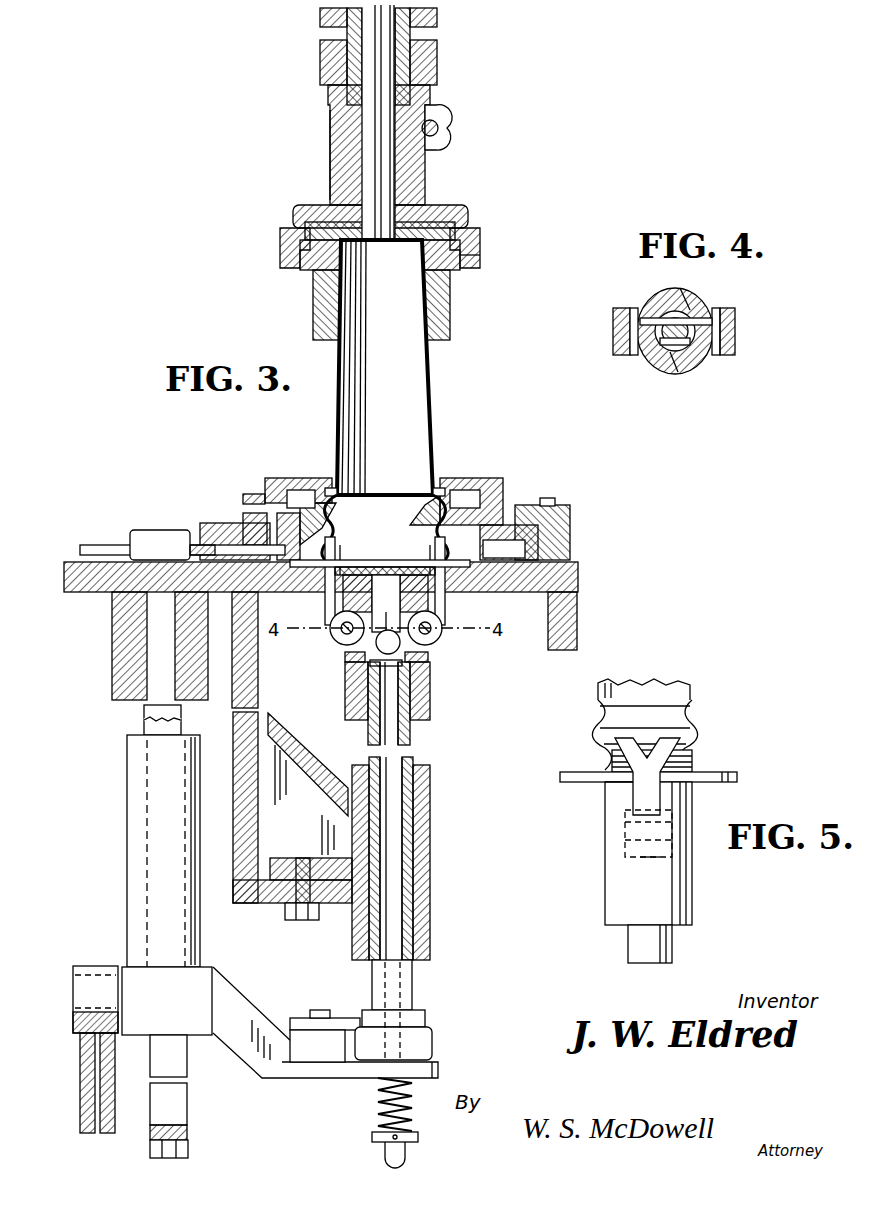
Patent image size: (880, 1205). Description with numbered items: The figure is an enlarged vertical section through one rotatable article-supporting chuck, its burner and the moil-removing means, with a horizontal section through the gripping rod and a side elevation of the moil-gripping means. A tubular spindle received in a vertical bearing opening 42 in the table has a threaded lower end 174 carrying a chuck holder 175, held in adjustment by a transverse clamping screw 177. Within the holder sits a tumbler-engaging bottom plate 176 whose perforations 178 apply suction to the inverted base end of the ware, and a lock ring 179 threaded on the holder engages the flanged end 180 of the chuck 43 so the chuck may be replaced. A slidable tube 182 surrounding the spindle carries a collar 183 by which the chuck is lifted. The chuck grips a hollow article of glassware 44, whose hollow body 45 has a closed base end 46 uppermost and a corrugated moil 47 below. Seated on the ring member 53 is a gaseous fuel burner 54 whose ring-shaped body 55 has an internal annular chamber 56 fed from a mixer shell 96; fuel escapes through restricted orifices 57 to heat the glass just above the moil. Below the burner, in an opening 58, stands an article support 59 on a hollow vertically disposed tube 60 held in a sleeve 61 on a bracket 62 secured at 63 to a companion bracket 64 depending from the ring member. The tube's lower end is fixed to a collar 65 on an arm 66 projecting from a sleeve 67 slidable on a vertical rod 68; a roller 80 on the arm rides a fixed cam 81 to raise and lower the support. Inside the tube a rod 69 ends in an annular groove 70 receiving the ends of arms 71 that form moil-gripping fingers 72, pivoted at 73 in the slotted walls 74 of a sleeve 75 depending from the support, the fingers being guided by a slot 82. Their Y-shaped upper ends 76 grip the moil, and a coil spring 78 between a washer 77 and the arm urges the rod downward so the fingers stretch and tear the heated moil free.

In FIG. 3, the vertical bearing openings 42 is at (390, 60).
In FIG. 3, the chuck 43 is at (318, 300).
In FIG. 3, the hollow article of glassware 44 is at (436, 381).
In FIG. 3, the hollow body 45 is at (350, 400).
In FIG. 5, the hollow body 45 is at (662, 683).
In FIG. 3, the closed base end 46 is at (390, 242).
In FIG. 3, the moil 47 is at (400, 512).
In FIG. 5, the moil 47 is at (680, 716).
In FIG. 3, the ring member 53 is at (578, 570).
In FIG. 3, the gaseous fuel burner 54 is at (246, 483).
In FIG. 3, the ring-shaped body 55 is at (505, 488).
In FIG. 3, the internal annular chamber 56 is at (298, 490).
In FIG. 3, the restricted orifices 57 is at (314, 494).
In FIG. 3, the openings 58 is at (468, 548).
In FIG. 3, the article support 59 is at (446, 593).
In FIG. 5, the article support 59 is at (730, 774).
In FIG. 3, the hollow vertically disposed tube 60 is at (432, 690).
In FIG. 5, the hollow vertically disposed tube 60 is at (655, 945).
In FIG. 3, the sleeve 61 is at (428, 800).
In FIG. 3, the bracket 62 is at (240, 898).
In FIG. 3, the securing means 63 is at (302, 921).
In FIG. 3, the companion bracket 64 is at (258, 705).
In FIG. 3, the collar 65 is at (414, 1044).
In FIG. 3, the arm 66 is at (274, 1074).
In FIG. 3, the sleeve 67 is at (130, 887).
In FIG. 3, the vertical rod 68 is at (148, 722).
In FIG. 3, the rod 69 is at (398, 736).
In FIG. 4, the rod 69 is at (700, 310).
In FIG. 3, the annular groove 70 is at (386, 603).
In FIG. 4, the annular groove 70 is at (657, 356).
In FIG. 3, the arms 71 is at (400, 647).
In FIG. 4, the arms 71 is at (683, 300).
In FIG. 3, the moil-gripping fingers 72 is at (328, 598).
In FIG. 5, the moil-gripping fingers 72 is at (650, 803).
In FIG. 3, the pivot 73 is at (340, 643).
In FIG. 4, the pivot 73 is at (625, 332).
In FIG. 5, the pivot 73 is at (626, 832).
In FIG. 3, the slotted walls 74 is at (348, 662).
In FIG. 5, the slotted walls 74 is at (646, 858).
In FIG. 3, the sleeve 75 is at (432, 714).
In FIG. 5, the sleeve 75 is at (612, 894).
In FIG. 5, the upper ends of fingers 76 is at (686, 746).
In FIG. 3, the washer 77 is at (372, 1137).
In FIG. 3, the coil spring 78 is at (380, 1096).
In FIG. 3, the roller 80 is at (97, 966).
In FIG. 3, the fixed cam 81 is at (90, 1080).
In FIG. 5, the slot 82 is at (632, 785).
In FIG. 3, the mixer shell 96 is at (218, 525).
In FIG. 3, the threaded lower end 174 is at (342, 158).
In FIG. 3, the chuck holder 175 is at (329, 183).
In FIG. 3, the tumbler-engaging bottom plate 176 is at (292, 240).
In FIG. 3, the transverse clamping screw 177 is at (438, 130).
In FIG. 3, the perforations 178 is at (395, 220).
In FIG. 3, the lock ring 179 is at (476, 262).
In FIG. 3, the flanged end 180 is at (456, 252).
In FIG. 3, the slidable tube 182 is at (336, 40).
In FIG. 3, the collar 183 is at (436, 72).